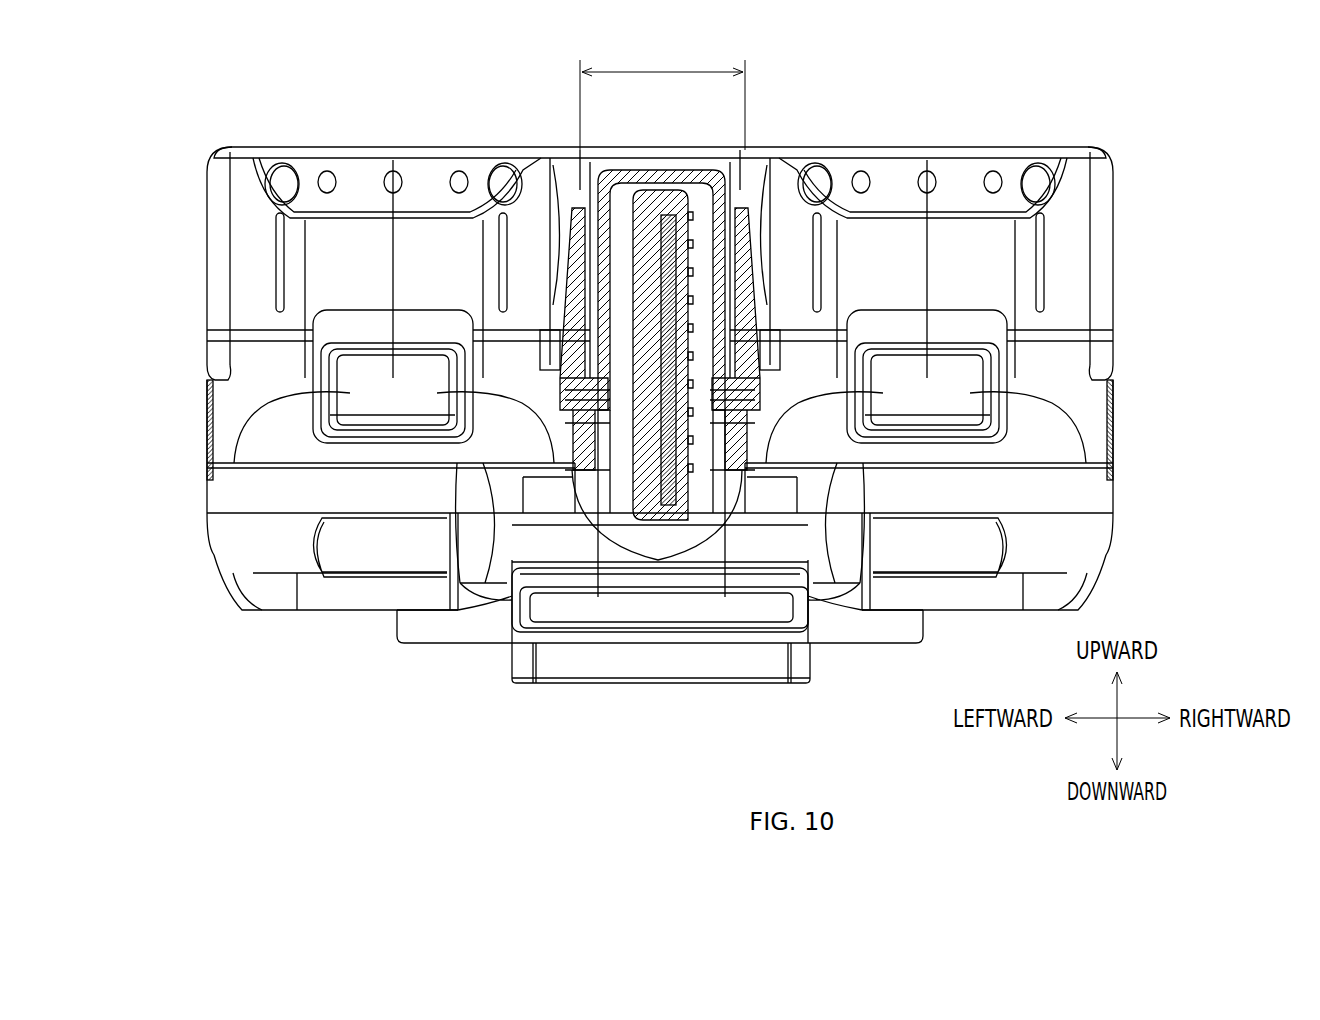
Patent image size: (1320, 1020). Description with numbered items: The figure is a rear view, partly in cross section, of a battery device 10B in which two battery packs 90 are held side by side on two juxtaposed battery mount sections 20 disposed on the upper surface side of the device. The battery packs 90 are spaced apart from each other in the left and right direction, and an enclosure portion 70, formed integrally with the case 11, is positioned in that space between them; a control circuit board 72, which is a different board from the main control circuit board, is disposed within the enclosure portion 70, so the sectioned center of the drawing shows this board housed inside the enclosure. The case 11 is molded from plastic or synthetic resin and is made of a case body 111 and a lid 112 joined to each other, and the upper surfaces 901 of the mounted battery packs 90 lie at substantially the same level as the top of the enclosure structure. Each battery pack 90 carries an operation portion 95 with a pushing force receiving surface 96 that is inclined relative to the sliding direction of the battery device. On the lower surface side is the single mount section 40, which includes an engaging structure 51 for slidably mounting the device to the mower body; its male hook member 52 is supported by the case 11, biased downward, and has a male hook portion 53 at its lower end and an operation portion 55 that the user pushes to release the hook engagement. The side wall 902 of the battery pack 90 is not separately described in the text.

The battery device 10B is at (658, 429).
The case 11 is at (724, 536).
The case body 111 is at (1070, 497).
The lid 112 is at (1080, 545).
The battery mount section 20 is at (280, 460).
The mount section 40 is at (480, 648).
The engaging structure 51 is at (661, 690).
The male hook member 52 is at (661, 677).
The male hook portion 53 is at (627, 740).
The operation portion 55 is at (618, 615).
The enclosure portion 70 is at (665, 175).
The control circuit board 72 is at (645, 190).
The battery pack 90 is at (407, 160).
The upper surface 901 is at (448, 150).
The side wall 902 is at (205, 282).
The operation portion 95 is at (652, 422).
The pushing force receiving surface 96 is at (350, 393).